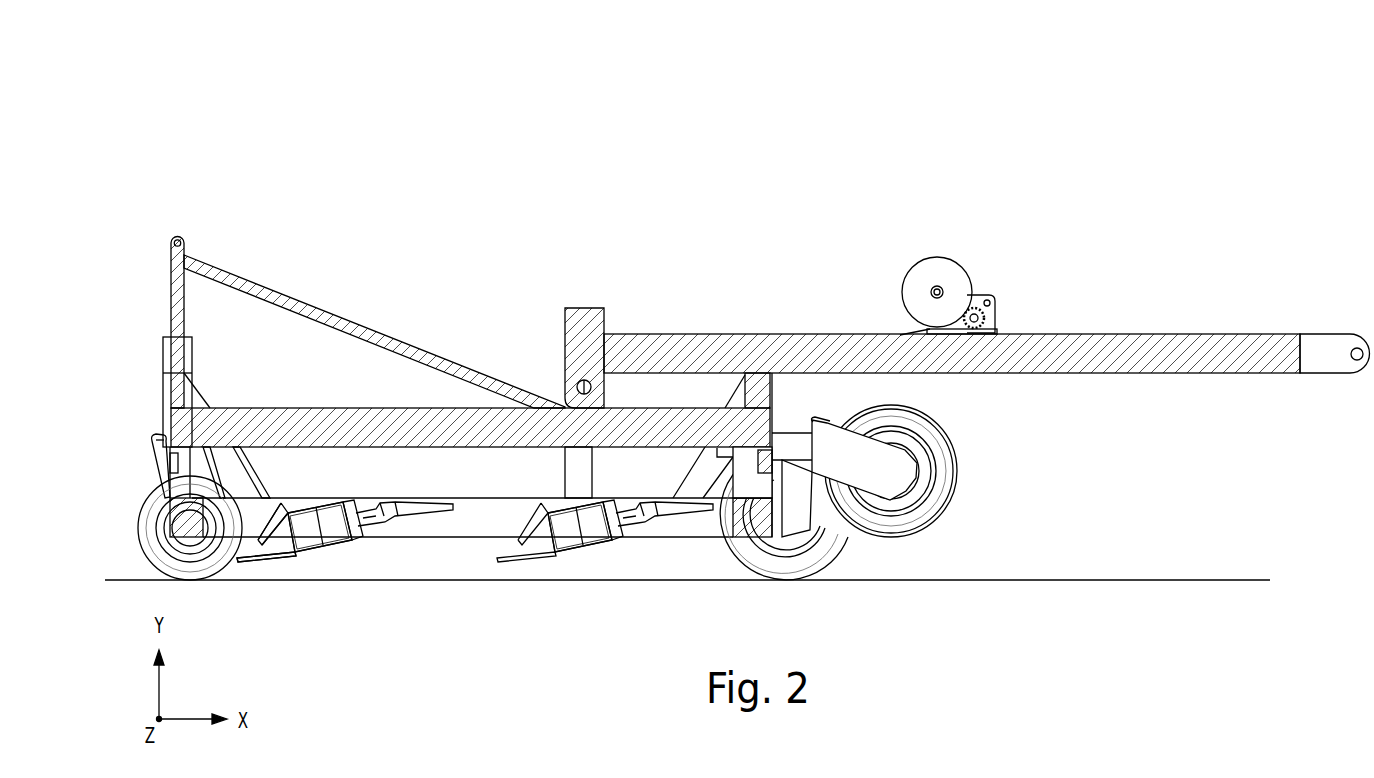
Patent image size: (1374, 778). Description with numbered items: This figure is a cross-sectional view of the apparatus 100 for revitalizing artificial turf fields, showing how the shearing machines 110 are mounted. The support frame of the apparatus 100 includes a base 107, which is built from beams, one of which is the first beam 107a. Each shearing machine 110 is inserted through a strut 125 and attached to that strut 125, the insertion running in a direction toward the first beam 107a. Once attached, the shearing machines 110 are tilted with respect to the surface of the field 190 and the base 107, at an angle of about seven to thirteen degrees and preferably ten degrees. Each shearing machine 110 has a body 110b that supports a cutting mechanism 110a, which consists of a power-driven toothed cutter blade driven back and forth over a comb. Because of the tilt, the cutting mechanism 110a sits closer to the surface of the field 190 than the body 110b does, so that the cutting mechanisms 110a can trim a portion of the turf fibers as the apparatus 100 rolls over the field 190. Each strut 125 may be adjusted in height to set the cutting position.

The apparatus 100 is at (1195, 137).
The base 107 is at (722, 539).
The first beam 107a is at (187, 525).
The shearing machines 110 is at (385, 537).
The cutting mechanism 110a is at (238, 562).
The body 110b is at (375, 502).
The strut 125 is at (305, 503).
The field 190 is at (1128, 578).